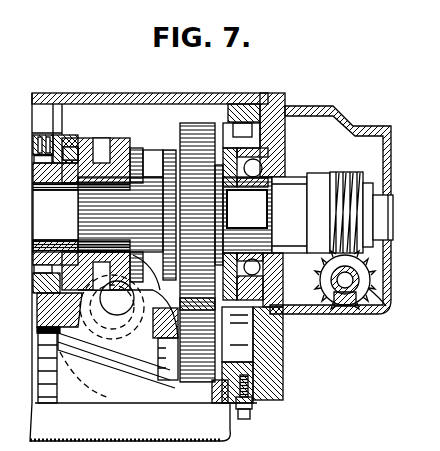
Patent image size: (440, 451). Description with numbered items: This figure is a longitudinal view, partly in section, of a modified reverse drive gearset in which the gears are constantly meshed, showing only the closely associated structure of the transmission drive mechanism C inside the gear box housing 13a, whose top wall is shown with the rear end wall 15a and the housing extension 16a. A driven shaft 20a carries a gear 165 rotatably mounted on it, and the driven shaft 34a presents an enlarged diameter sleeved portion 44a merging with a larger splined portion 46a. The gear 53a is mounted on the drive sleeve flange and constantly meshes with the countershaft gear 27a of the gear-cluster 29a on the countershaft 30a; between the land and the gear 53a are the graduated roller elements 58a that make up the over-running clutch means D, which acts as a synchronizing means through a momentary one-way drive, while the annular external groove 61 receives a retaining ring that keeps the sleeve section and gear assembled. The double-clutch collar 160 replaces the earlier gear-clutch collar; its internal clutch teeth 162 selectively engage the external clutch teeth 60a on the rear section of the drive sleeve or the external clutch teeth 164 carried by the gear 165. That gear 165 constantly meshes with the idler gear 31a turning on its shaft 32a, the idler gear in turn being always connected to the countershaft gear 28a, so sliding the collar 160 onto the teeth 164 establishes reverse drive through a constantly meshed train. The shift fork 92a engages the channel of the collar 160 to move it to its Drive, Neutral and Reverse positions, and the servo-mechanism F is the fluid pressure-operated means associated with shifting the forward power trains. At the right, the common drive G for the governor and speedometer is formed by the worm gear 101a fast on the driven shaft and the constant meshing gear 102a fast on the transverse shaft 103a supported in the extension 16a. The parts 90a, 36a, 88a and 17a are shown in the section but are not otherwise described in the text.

The gear box housing 13a is at (185, 94).
The gear 165 is at (238, 104).
The rear end wall 15a is at (272, 100).
The transmission housing extension 16a is at (362, 125).
The over-running clutch means D is at (48, 146).
The transmission drive mechanism C is at (82, 126).
The clutch ring 90a is at (103, 137).
The gear 53a is at (70, 127).
The graduated roller elements 58a is at (36, 155).
The driven shaft 34a is at (30, 206).
The enlarged diameter sleeved portion 44a is at (98, 214).
The double-clutch collar 160 is at (133, 140).
The internal clutch teeth 162 is at (150, 150).
The external clutch teeth 164 is at (178, 152).
The splined portion 46a is at (133, 218).
The driven shaft 20a is at (283, 198).
The worm gear 101a is at (345, 167).
The bearing 36a is at (278, 260).
The common drive G is at (367, 258).
The shaft 103a is at (350, 305).
The constant meshing gear 102a is at (386, 306).
The shaft 32a is at (284, 328).
The countershaft 30a is at (262, 350).
The idler gear 31a is at (246, 420).
The external clutch teeth 60a is at (40, 271).
The annular external groove 61 is at (46, 297).
The brake drum 88a is at (40, 294).
The shift fork 92a is at (97, 315).
The countershaft gear 27a is at (37, 405).
The housing pan 17a is at (86, 440).
The gear-cluster 29a is at (99, 390).
The servo-mechanism F is at (160, 382).
The countershaft gear 28a is at (173, 383).